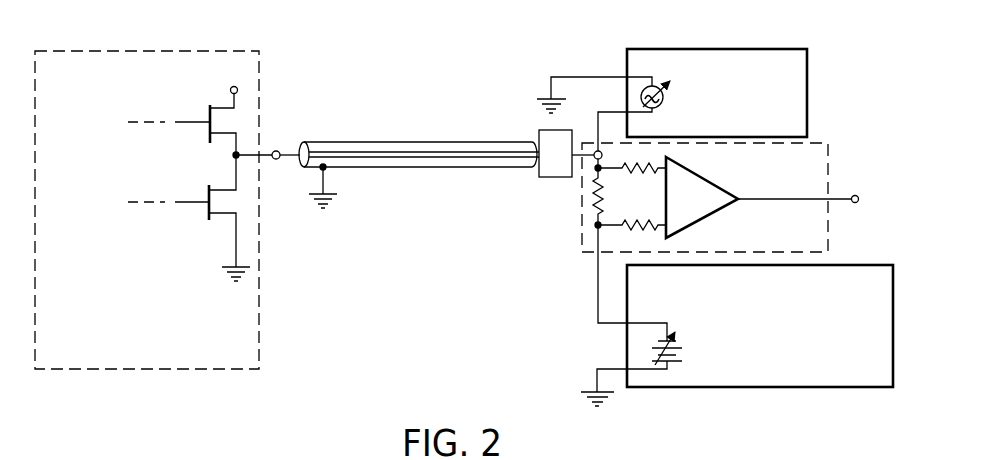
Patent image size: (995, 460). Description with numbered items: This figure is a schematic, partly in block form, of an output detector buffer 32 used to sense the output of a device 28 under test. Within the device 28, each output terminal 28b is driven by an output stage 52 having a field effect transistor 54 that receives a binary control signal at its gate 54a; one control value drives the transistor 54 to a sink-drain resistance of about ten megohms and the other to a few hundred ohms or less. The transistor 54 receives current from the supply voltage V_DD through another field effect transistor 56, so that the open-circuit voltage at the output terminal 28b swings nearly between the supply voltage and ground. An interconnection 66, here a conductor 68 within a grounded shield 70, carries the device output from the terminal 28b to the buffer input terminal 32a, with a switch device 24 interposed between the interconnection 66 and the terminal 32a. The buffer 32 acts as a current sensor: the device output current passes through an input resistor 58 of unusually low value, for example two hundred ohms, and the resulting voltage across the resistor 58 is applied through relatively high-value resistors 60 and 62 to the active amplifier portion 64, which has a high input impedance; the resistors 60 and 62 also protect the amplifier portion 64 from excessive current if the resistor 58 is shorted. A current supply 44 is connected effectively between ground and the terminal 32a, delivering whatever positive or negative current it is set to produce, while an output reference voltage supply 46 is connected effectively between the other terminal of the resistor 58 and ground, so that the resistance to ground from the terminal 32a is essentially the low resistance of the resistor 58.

The switch device 24 is at (538, 132).
The device 28 is at (268, 81).
The output terminal 28b is at (278, 150).
The buffer 32 is at (818, 142).
The input terminal 32a is at (594, 151).
The current supply 44 is at (810, 76).
The output reference voltage supply 46 is at (840, 264).
The output stage 52 is at (192, 195).
The field effect transistor 54 is at (189, 218).
The gate 54a is at (228, 222).
The field effect transistor 56 is at (207, 135).
The input resistor 58 is at (592, 205).
The resistor 60 is at (640, 166).
The resistor 62 is at (648, 222).
The active amplifier portion 64 is at (703, 180).
The interconnection 66 is at (424, 138).
The conductor 68 is at (432, 158).
The grounded shield 70 is at (375, 168).